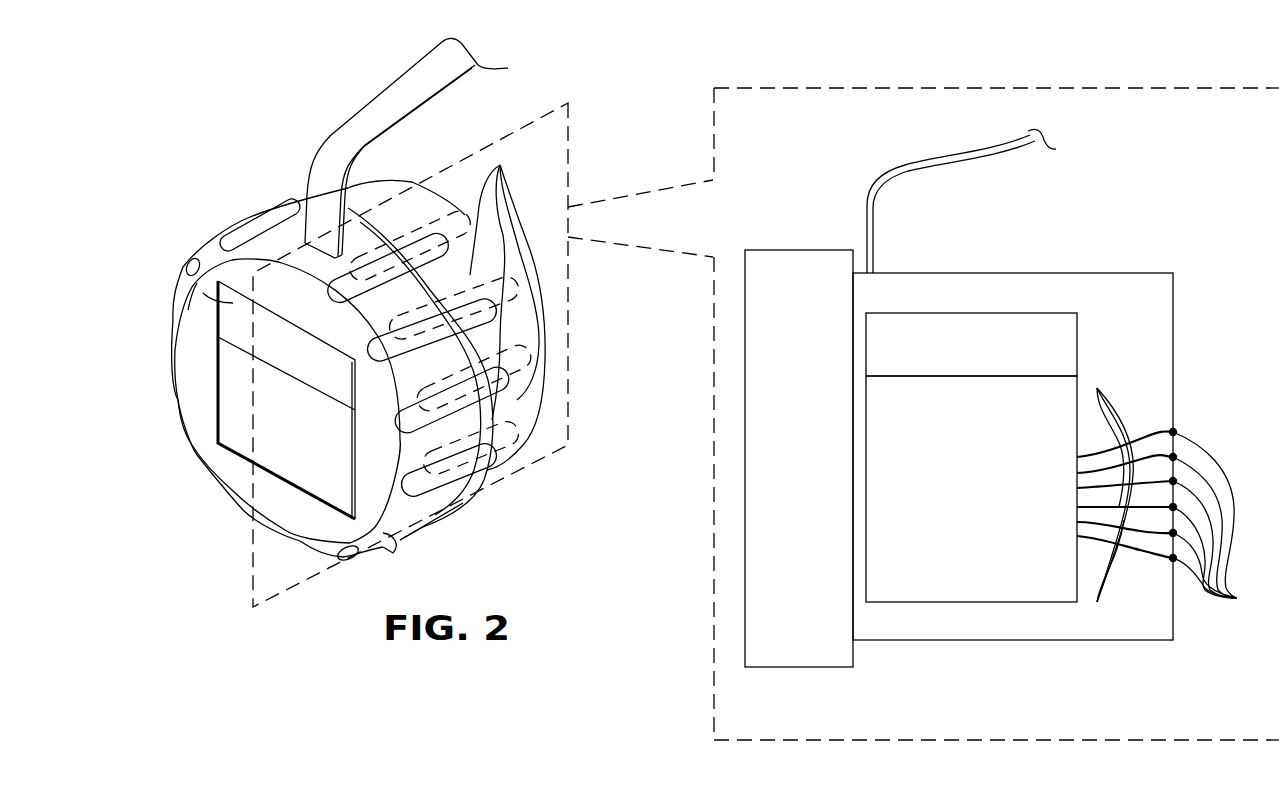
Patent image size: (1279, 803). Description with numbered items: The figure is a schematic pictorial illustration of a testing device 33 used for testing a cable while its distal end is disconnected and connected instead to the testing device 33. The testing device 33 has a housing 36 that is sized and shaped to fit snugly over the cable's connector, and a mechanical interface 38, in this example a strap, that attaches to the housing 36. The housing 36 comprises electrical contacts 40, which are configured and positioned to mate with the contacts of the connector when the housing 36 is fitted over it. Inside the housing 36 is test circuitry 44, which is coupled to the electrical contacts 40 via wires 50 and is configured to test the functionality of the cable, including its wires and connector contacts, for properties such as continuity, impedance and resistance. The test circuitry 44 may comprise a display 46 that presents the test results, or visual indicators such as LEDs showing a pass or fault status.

The testing device 33 is at (268, 104).
The housing 36 is at (197, 352).
The mechanical interface 38 is at (420, 80).
The electrical contacts 40 is at (870, 380).
The test circuitry 44 is at (218, 400).
The display 46 is at (193, 290).
The wires 50 is at (1109, 497).